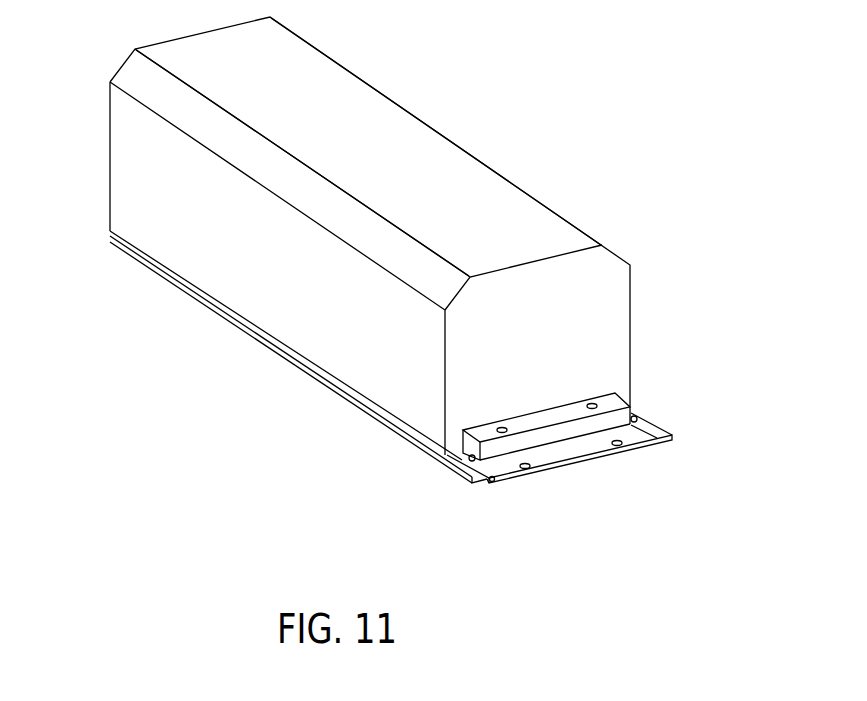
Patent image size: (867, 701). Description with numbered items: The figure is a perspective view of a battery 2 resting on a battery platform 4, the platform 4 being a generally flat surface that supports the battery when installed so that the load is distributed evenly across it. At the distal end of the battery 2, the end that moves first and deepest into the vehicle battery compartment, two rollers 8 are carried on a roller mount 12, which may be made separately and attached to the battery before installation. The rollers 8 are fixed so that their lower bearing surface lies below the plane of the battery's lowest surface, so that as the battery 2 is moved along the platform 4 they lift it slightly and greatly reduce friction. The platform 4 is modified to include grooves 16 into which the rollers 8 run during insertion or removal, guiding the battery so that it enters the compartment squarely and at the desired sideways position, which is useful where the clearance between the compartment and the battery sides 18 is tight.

The battery 2 is at (600, 290).
The battery platform 4 is at (412, 445).
The rollers 8 is at (635, 420).
The roller mount 12 is at (618, 396).
The grooves 16 is at (493, 482).
The battery sides 18 is at (150, 180).